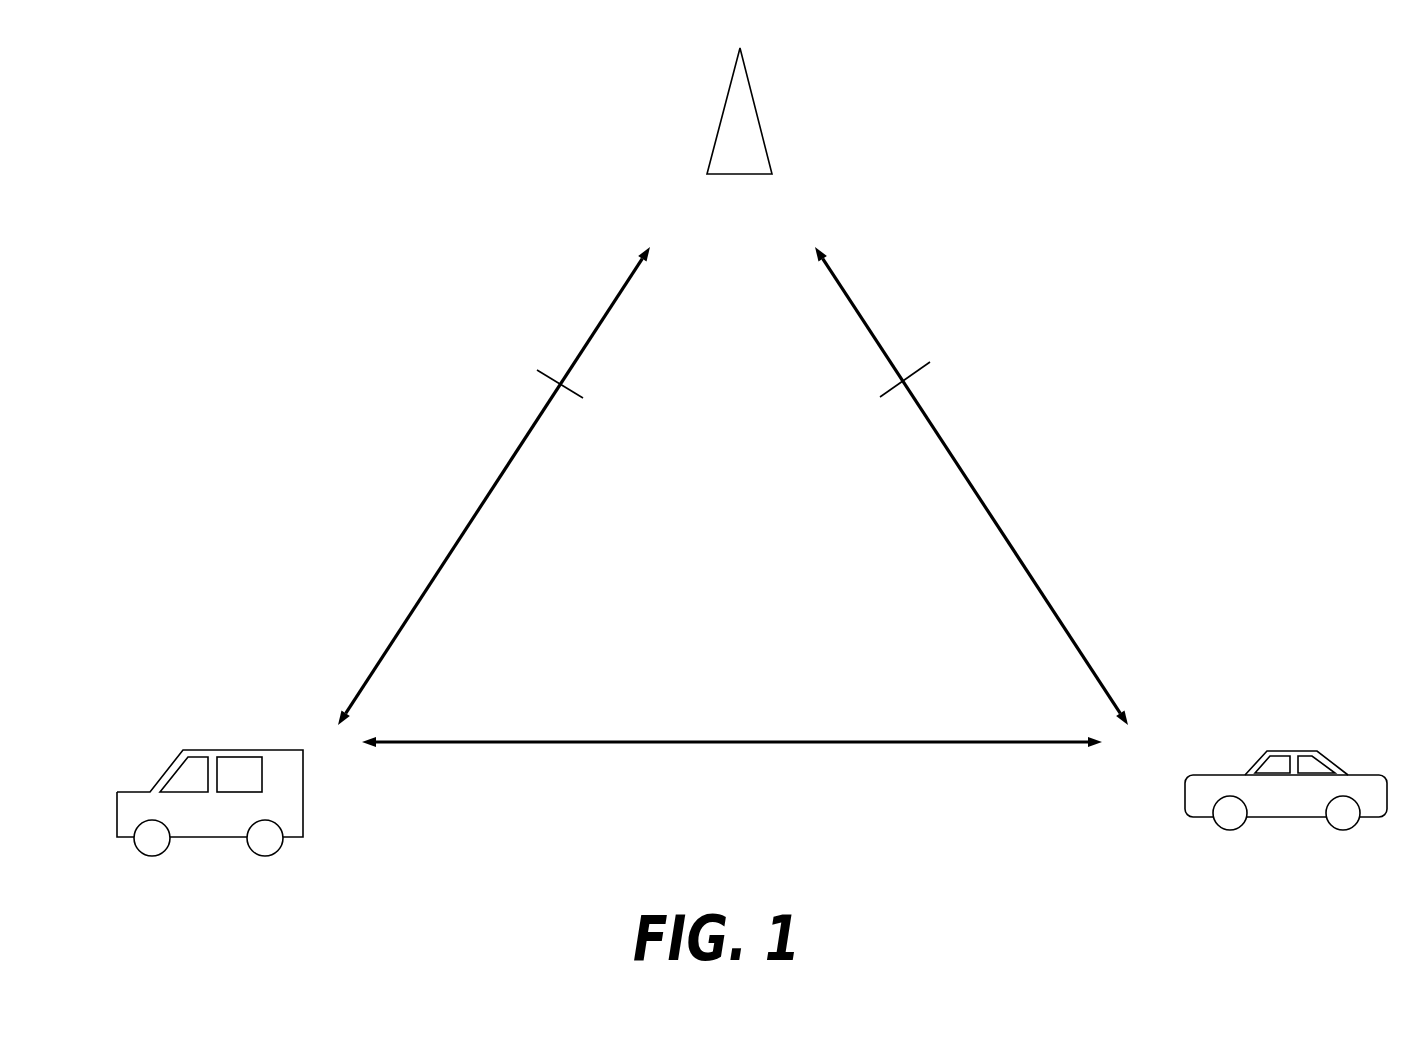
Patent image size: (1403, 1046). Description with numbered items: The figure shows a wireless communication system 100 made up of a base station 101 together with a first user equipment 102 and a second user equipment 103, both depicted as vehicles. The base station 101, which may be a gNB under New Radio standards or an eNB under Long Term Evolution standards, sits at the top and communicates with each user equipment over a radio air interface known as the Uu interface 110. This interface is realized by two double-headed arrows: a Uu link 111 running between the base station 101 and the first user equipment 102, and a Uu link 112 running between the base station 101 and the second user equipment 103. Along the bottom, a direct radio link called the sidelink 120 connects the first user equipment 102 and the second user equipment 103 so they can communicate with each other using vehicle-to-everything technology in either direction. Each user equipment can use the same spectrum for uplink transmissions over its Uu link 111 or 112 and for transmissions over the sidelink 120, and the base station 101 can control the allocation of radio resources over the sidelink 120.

The wireless communication system 100 is at (1176, 132).
The base station 101 is at (757, 115).
The first user equipment 102 is at (220, 825).
The second user equipment 103 is at (1296, 800).
The Uu interface 110 is at (577, 388).
The Uu link 111 is at (462, 538).
The Uu link 112 is at (998, 533).
The sidelink 120 is at (660, 740).